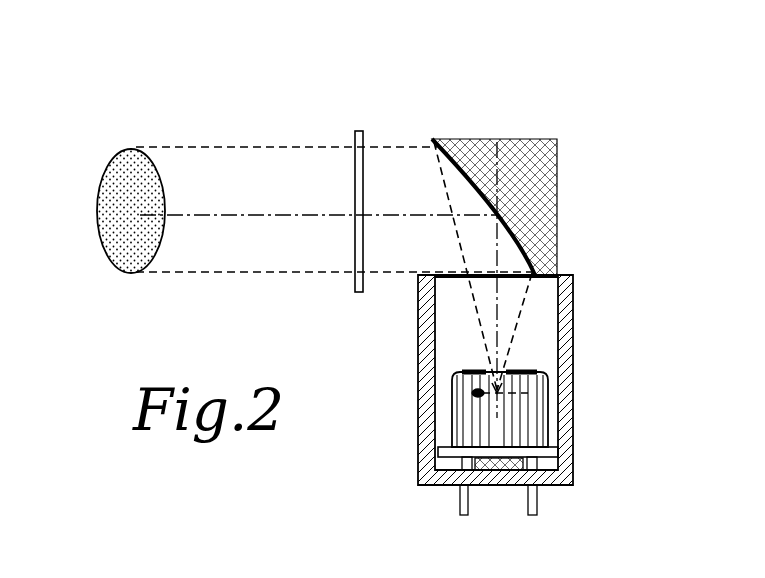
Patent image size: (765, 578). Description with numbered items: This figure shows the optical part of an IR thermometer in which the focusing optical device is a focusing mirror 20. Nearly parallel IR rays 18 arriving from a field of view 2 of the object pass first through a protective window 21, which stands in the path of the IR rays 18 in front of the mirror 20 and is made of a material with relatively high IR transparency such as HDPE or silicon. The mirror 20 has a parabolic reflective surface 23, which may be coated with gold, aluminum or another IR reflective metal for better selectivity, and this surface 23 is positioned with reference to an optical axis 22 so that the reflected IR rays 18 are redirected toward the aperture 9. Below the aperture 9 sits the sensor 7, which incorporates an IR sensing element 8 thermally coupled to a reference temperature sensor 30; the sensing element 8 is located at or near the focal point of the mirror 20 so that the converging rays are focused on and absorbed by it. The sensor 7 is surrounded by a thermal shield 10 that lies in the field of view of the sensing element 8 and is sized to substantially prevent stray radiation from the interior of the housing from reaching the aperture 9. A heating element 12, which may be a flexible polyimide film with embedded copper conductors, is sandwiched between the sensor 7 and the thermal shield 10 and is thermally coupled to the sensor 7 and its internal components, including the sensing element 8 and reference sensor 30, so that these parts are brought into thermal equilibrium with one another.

The field of view 2 is at (120, 225).
The IR rays 18 is at (156, 148).
The optical axis 22 is at (192, 217).
The protective window 21 is at (353, 160).
The parabolic reflective surface 23 is at (467, 183).
The focusing mirror 20 is at (500, 163).
The aperture 9 is at (500, 378).
The thermal shield 10 is at (425, 472).
The sensor 7 is at (533, 418).
The IR sensing element 8 is at (525, 393).
The reference temperature sensor 30 is at (476, 397).
The heating element 12 is at (502, 463).